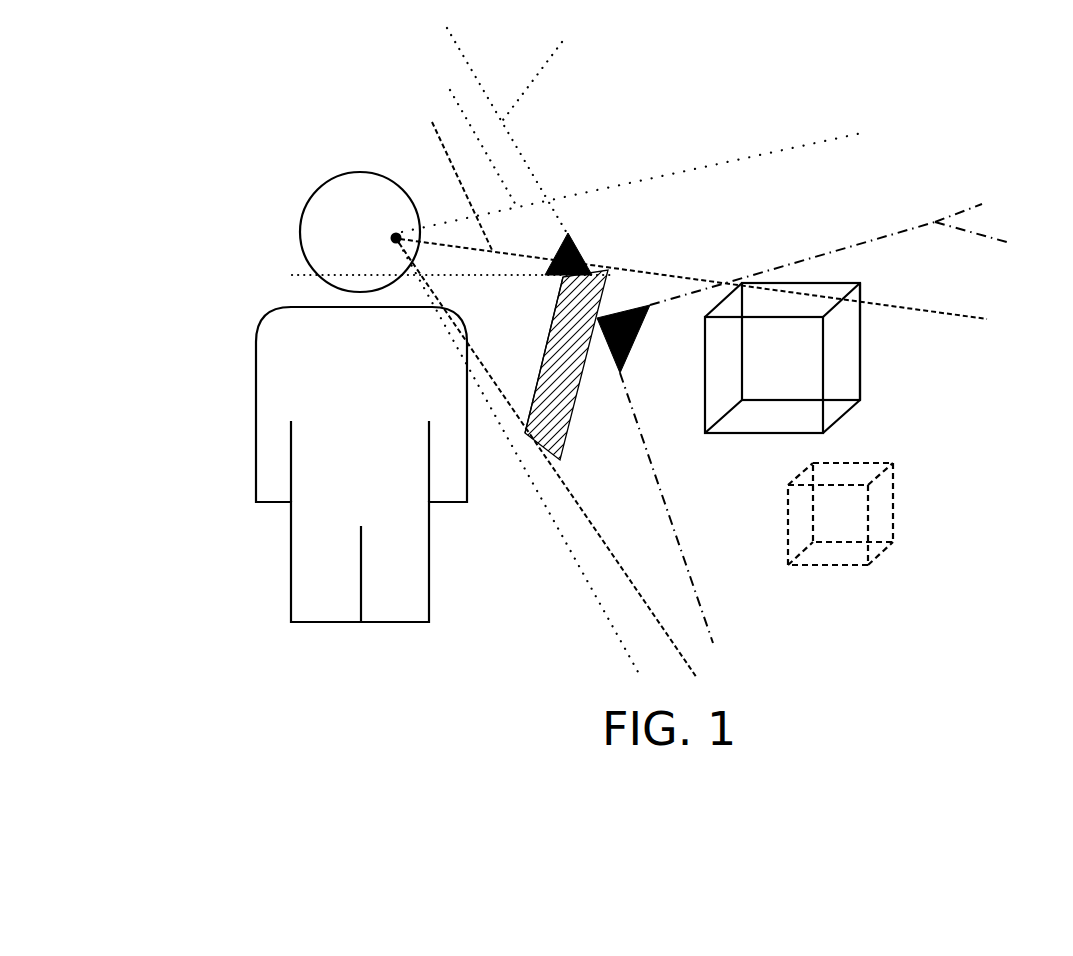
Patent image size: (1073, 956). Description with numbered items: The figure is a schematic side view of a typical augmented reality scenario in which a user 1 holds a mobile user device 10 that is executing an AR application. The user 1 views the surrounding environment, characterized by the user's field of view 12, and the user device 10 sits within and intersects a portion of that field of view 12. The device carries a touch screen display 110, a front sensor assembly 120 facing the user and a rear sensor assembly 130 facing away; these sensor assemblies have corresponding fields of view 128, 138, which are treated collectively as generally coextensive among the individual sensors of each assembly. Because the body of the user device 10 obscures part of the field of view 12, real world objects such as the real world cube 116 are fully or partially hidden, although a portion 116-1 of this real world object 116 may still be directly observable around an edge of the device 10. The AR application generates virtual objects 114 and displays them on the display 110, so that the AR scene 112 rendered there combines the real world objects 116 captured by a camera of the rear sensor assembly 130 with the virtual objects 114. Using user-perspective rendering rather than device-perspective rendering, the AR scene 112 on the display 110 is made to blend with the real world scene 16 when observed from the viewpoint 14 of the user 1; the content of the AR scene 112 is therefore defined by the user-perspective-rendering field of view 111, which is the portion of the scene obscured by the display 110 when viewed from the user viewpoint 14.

The user 1 is at (348, 424).
The user device 10 is at (548, 463).
The field of view 12 is at (472, 136).
The viewpoint 14 is at (391, 238).
The real world scene 16 is at (916, 628).
The touch screen display 110 is at (558, 347).
The user-perspective-rendering field of view 111 is at (444, 180).
The AR scene 112 is at (557, 393).
The virtual objects 114 is at (893, 503).
The real world cube 116 is at (860, 370).
The portion of real world object 116-1 is at (860, 292).
The front sensor assembly 120 is at (580, 245).
The field of view of front sensor assembly 128 is at (546, 69).
The rear sensor assembly 130 is at (622, 315).
The field of view of rear sensor assembly 138 is at (837, 423).